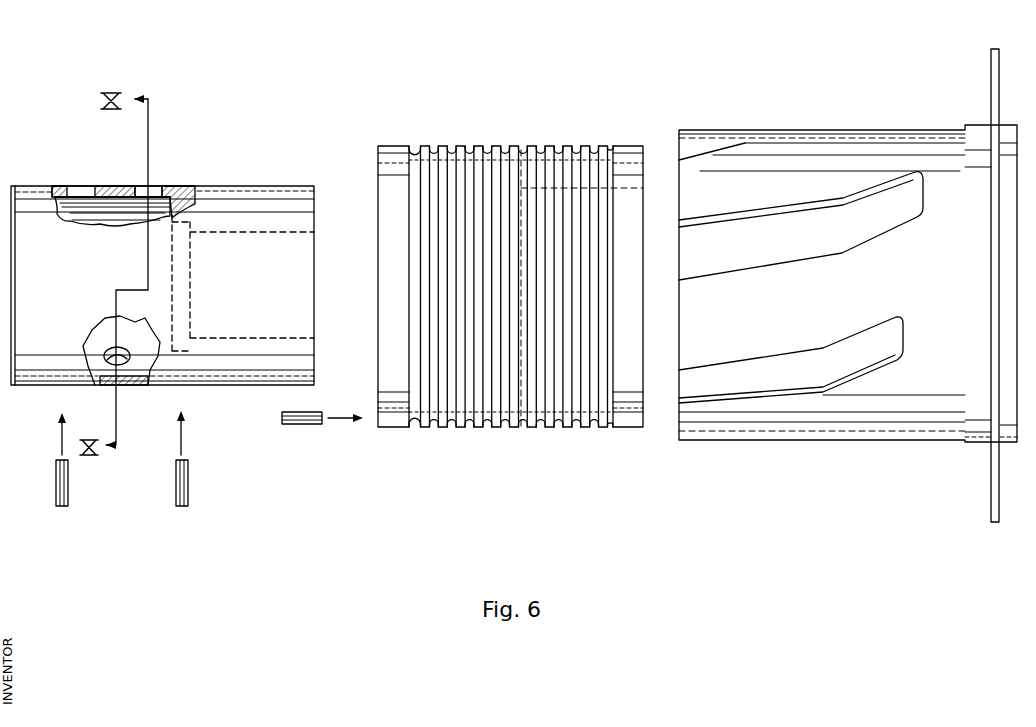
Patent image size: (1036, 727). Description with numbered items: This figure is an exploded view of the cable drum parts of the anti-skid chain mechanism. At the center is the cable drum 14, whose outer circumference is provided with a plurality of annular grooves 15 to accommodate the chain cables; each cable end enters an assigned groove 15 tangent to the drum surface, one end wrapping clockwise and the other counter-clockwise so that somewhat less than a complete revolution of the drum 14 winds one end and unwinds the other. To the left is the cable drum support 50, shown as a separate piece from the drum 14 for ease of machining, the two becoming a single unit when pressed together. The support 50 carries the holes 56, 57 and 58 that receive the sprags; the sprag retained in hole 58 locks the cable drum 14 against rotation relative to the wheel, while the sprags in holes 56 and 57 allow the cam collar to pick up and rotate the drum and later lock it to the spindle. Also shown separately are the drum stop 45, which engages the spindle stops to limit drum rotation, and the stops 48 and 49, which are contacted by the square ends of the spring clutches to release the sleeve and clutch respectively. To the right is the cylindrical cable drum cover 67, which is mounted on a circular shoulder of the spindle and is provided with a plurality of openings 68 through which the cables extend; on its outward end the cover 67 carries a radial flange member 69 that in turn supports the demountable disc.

The cable drum 14 is at (510, 284).
The annular grooves 15 is at (448, 152).
The drum stop 45 is at (305, 424).
The stop 48 is at (66, 506).
The stop 49 is at (188, 490).
The cable drum support 50 is at (230, 185).
The hole 56 is at (80, 191).
The hole 57 is at (160, 189).
The hole 58 is at (108, 350).
The cylindrical cable drum cover 67 is at (806, 442).
The openings 68 is at (692, 150).
The radial flange member 69 is at (990, 68).